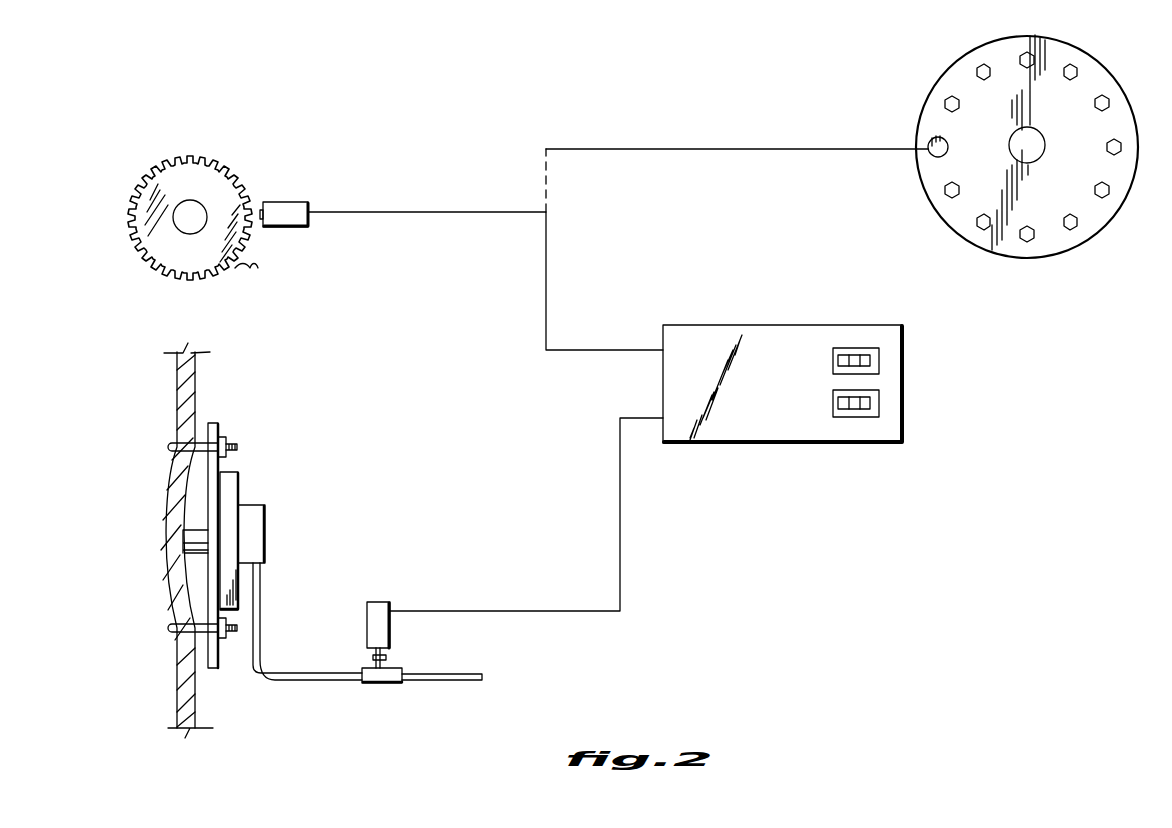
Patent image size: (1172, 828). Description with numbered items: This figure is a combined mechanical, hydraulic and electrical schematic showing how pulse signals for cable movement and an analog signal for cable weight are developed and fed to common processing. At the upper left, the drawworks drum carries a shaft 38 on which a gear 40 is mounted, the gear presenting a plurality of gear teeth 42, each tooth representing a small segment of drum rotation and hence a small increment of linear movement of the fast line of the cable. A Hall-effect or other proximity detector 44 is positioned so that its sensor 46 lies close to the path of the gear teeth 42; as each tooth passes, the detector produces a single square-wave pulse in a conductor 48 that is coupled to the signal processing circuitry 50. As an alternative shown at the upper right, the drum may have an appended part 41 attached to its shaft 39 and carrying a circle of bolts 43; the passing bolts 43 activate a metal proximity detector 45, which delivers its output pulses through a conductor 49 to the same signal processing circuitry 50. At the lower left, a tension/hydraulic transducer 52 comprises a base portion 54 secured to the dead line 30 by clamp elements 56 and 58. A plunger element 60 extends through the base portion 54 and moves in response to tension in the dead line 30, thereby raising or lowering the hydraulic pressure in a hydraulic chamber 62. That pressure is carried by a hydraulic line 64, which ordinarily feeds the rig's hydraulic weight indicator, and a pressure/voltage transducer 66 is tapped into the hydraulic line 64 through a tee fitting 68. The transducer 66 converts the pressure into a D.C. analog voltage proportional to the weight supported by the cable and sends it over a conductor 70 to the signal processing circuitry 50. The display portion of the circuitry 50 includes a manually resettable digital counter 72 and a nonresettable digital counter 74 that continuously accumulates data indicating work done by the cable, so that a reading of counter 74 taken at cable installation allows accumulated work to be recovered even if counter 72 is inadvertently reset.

The dead line 30 is at (177, 410).
The shaft 38 is at (185, 230).
The shaft 39 is at (1020, 138).
The gear 40 is at (160, 190).
The appended part 41 is at (1045, 245).
The gear teeth 42 is at (240, 270).
The bolts 43 is at (1118, 138).
The proximity detector 44 is at (300, 228).
The metal proximity detector 45 is at (930, 138).
The sensor 46 is at (262, 205).
The conductor 48 is at (460, 214).
The conductor 49 is at (670, 149).
The signal processing circuitry 50 is at (776, 325).
The tension/hydraulic transducer 52 is at (304, 480).
The base portion 54 is at (212, 423).
The clamp element 56 is at (168, 447).
The clamp element 58 is at (168, 628).
The plunger element 60 is at (185, 532).
The hydraulic chamber 62 is at (265, 525).
The hydraulic line 64 is at (278, 683).
The pressure/voltage transducer 66 is at (367, 640).
The tee fitting 68 is at (378, 684).
The conductor 70 is at (528, 611).
The digital counter 72 is at (852, 352).
The digital counter 74 is at (846, 412).